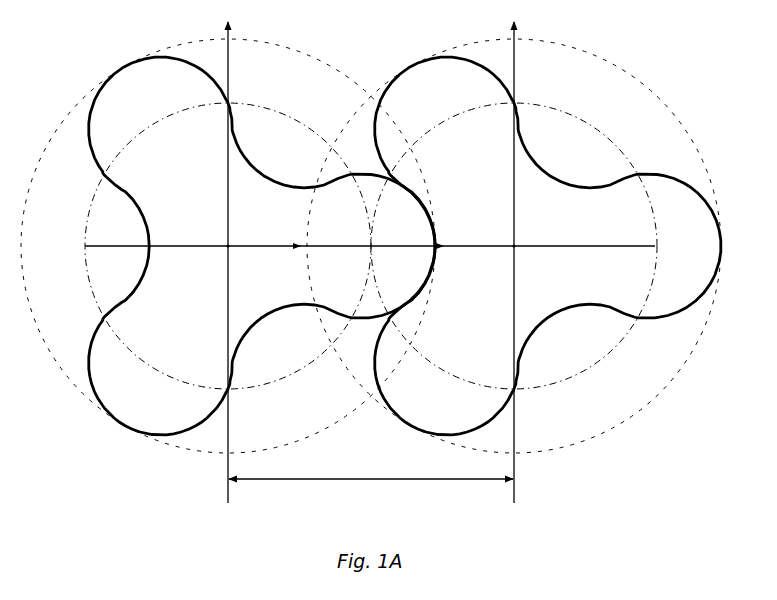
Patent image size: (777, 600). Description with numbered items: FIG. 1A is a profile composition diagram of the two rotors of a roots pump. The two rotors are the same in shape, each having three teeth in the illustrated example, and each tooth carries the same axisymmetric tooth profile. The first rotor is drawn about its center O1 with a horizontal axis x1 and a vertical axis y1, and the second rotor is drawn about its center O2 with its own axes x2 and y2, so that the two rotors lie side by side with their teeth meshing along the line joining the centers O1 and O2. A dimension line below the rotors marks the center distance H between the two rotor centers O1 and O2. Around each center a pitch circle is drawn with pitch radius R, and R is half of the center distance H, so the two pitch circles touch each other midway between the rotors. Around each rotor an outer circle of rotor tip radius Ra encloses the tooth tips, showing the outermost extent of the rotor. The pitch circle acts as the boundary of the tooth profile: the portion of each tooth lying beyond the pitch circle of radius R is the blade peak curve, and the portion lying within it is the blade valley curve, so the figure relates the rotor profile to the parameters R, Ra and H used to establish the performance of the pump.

The pitch radius R is at (228, 246).
The rotor tip radius Ra is at (228, 246).
The center distance H is at (371, 465).
The center of first rotor O1 is at (206, 235).
The center of second rotor O2 is at (529, 235).
The x axis of first rotor x1 is at (228, 256).
The x axis of second rotor x2 is at (513, 256).
The y axis of first rotor y1 is at (214, 259).
The y axis of second rotor y2 is at (530, 259).